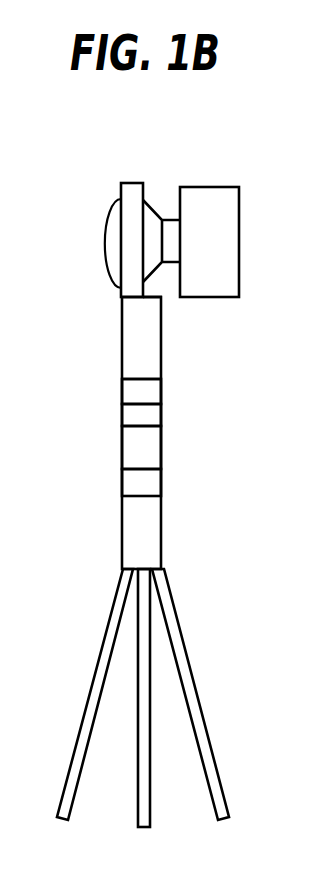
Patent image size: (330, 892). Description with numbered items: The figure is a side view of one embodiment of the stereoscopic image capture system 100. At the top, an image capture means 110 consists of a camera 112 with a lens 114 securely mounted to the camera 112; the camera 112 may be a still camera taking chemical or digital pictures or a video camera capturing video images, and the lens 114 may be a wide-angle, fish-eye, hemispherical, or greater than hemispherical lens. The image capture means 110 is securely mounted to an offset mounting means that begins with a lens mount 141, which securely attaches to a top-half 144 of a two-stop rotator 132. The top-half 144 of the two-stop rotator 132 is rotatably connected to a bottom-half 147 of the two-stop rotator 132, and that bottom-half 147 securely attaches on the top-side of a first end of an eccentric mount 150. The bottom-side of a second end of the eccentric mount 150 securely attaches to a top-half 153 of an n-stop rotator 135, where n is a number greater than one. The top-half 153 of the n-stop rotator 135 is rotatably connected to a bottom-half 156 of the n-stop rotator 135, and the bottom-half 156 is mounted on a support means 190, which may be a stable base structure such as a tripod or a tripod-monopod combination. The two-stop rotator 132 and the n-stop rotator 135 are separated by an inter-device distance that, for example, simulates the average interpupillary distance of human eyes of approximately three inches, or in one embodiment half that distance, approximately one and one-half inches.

The stereoscopic image capture system 100 is at (80, 135).
The image capture means 110 is at (278, 176).
The camera 112 is at (228, 240).
The lens 114 is at (113, 235).
The lens mount 141 is at (135, 192).
The top-half of two-stop rotator 144 is at (149, 330).
The bottom-half of two-stop rotator 147 is at (149, 387).
The eccentric mount 150 is at (149, 415).
The top-half of n-stop rotator 153 is at (152, 458).
The bottom-half of n-stop rotator 156 is at (152, 488).
The two-stop rotator 132 is at (312, 369).
The n-stop rotator 135 is at (312, 489).
The support means 190 is at (145, 548).